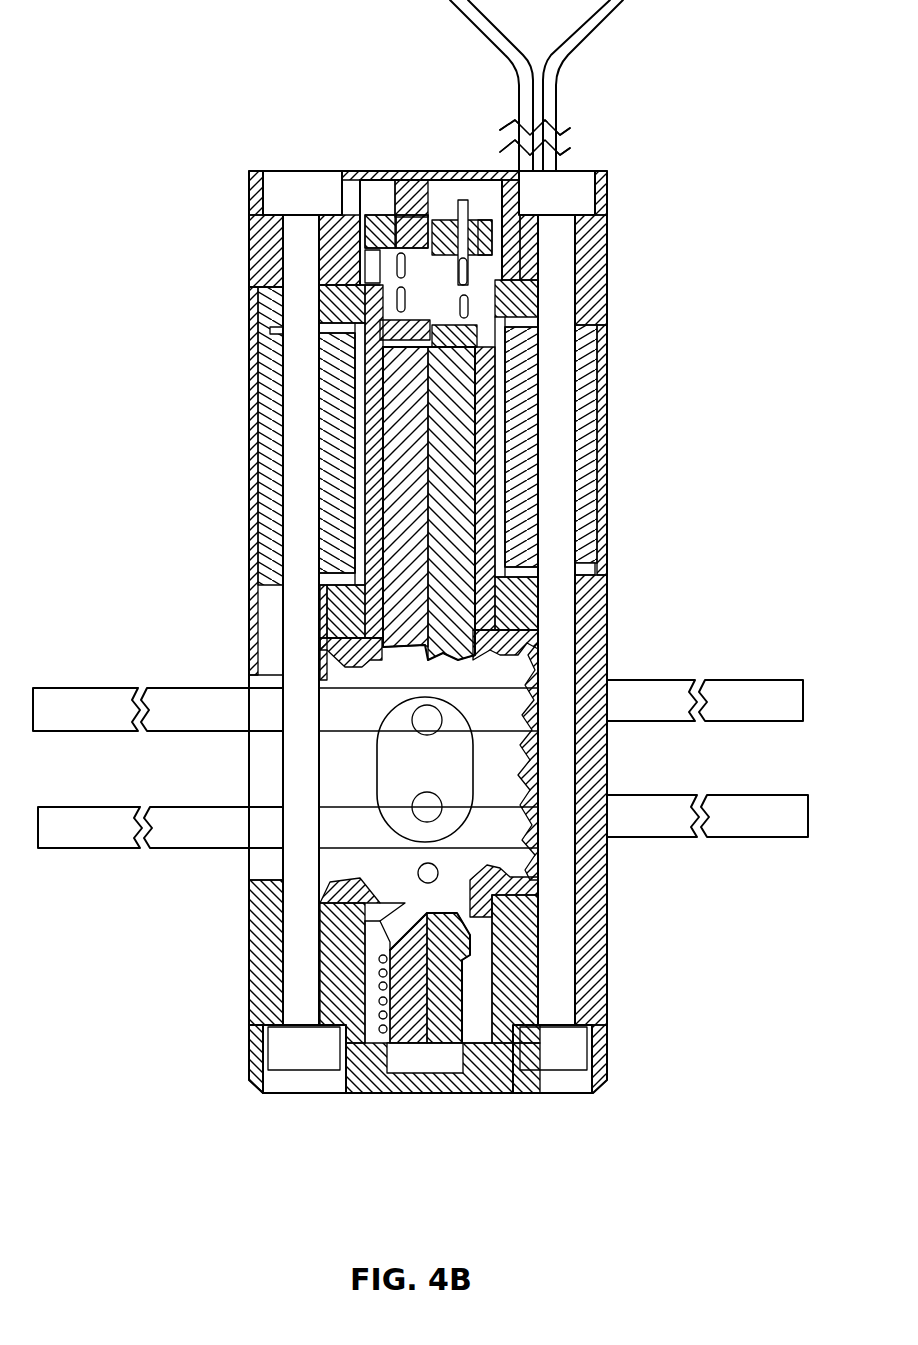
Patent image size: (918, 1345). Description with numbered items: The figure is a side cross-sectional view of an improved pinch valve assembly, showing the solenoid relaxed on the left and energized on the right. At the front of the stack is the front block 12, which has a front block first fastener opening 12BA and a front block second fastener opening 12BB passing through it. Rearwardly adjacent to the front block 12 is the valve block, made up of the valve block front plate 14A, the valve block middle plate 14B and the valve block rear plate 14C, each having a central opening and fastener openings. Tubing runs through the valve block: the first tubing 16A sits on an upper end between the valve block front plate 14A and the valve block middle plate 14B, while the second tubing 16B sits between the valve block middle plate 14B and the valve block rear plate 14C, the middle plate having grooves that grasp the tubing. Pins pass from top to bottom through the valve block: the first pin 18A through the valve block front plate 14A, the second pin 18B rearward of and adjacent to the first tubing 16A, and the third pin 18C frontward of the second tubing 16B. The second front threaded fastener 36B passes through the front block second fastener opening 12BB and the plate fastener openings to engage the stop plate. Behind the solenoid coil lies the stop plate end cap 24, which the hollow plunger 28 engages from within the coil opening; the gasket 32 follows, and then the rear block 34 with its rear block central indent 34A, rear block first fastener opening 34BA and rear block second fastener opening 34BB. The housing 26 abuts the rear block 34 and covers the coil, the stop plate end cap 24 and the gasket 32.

The front block 12 is at (290, 1005).
The front block first fastener opening 12BA is at (332, 1060).
The front block second fastener opening 12BB is at (562, 1083).
The valve block front plate 14A is at (607, 878).
The valve block middle plate 14B is at (590, 757).
The valve block rear plate 14C is at (600, 625).
The first tubing 16A is at (75, 826).
The second tubing 16B is at (85, 700).
The first pin 18A is at (418, 874).
The second pin 18B is at (350, 807).
The third pin 18C is at (340, 727).
The stop plate end cap 24 is at (600, 294).
The housing 26 is at (607, 480).
The hollow plunger 28 is at (583, 358).
The gasket 32 is at (256, 294).
The rear block 34 is at (597, 240).
The rear block central indent 34A is at (438, 1019).
The rear block first fastener opening 34BA is at (297, 233).
The rear block second fastener opening 34BB is at (563, 232).
The second front threaded fastener 36B is at (557, 1055).